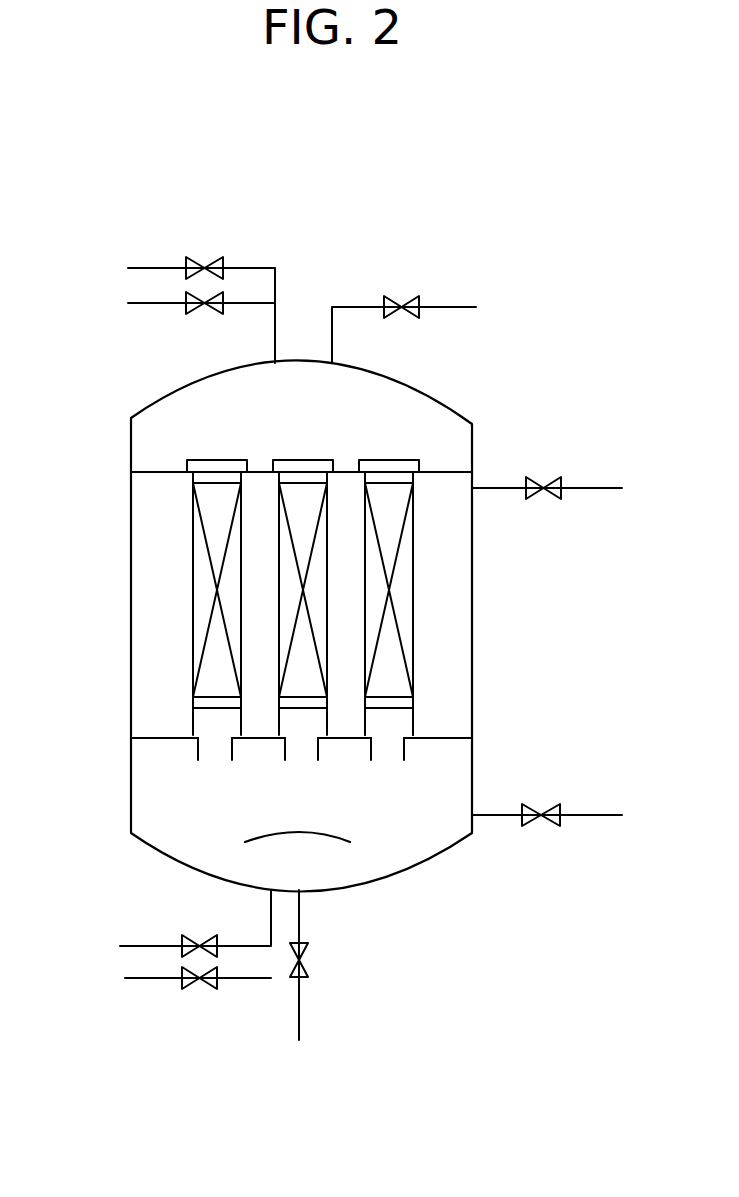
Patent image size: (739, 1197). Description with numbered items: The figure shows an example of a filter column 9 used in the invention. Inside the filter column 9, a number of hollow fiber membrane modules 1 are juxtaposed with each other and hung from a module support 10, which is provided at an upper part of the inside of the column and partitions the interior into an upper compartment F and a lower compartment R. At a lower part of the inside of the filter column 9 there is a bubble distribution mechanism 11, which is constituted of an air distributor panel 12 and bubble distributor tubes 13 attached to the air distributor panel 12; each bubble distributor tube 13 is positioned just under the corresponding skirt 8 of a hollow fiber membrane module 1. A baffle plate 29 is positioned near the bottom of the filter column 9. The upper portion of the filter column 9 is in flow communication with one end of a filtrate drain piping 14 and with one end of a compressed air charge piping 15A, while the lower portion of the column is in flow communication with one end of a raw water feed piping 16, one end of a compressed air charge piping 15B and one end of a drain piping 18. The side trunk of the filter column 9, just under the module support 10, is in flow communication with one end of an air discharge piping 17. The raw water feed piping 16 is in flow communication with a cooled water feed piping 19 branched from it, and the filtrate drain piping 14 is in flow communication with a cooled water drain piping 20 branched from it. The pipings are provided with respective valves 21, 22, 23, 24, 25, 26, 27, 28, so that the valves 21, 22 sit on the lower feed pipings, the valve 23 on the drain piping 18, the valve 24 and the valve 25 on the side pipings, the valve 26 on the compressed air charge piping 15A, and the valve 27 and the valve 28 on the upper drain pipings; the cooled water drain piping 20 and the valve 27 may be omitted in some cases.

The hollow fiber membrane module 1 is at (413, 612).
The skirt 8 is at (413, 720).
The filter column 9 is at (472, 683).
The module support 10 is at (440, 472).
The bubble distribution mechanism 11 is at (157, 740).
The air distributor panel 12 is at (440, 740).
The bubble distributor tube 13 is at (370, 760).
The filtrate drain piping 14 is at (243, 303).
The compressed air charge piping 15A is at (465, 307).
The compressed air charge piping 15B is at (597, 818).
The raw water feed piping 16 is at (143, 945).
The air discharge piping 17 is at (505, 490).
The drain piping 18 is at (300, 917).
The cooled water feed piping 19 is at (252, 980).
The cooled water drain piping 20 is at (255, 270).
The valve 21 is at (197, 942).
The valve 22 is at (197, 990).
The valve 23 is at (305, 972).
The valve 24 is at (548, 808).
The valve 25 is at (540, 480).
The valve 26 is at (395, 303).
The valve 27 is at (197, 257).
The valve 28 is at (190, 308).
The baffle plate 29 is at (258, 845).
The lower compartment R is at (157, 612).
The upper compartment F is at (398, 407).